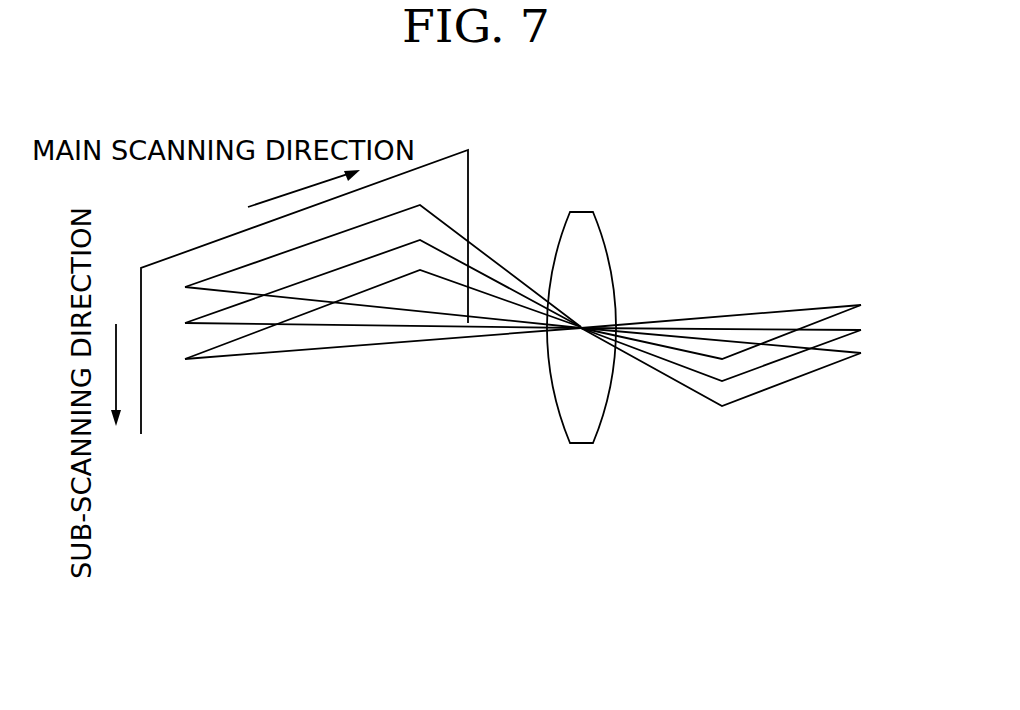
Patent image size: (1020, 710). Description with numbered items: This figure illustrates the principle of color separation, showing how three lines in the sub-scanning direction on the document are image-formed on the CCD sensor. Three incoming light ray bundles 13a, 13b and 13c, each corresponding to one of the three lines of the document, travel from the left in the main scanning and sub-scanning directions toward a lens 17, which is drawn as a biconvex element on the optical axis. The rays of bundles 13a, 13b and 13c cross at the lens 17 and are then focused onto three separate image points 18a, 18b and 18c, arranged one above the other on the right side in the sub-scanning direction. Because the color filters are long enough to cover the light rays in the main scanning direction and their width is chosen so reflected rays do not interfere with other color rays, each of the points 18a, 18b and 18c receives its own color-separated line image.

The light beam 13a is at (383, 256).
The light beam 13b is at (383, 273).
The light beam 13c is at (383, 305).
The lens 17 is at (593, 211).
The image point 18a is at (742, 326).
The image point 18b is at (743, 348).
The image point 18c is at (742, 367).